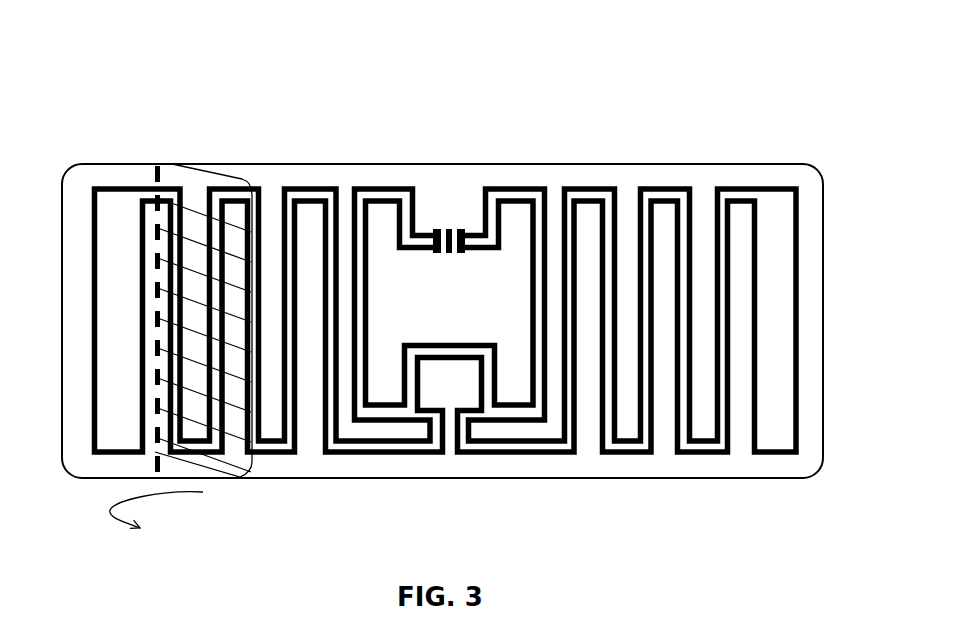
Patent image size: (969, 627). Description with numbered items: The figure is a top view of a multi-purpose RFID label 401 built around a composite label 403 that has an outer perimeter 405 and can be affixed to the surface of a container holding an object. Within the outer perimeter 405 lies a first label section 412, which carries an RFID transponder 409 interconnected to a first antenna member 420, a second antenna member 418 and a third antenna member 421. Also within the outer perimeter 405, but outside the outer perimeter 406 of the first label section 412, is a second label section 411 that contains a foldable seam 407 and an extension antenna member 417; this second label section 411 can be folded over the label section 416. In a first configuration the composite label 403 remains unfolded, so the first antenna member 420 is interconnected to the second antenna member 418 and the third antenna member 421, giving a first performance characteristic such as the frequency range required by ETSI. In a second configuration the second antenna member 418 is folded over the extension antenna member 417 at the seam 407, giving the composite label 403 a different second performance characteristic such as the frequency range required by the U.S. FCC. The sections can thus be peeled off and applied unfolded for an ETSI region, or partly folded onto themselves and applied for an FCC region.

The multi-purpose RFID label 401 is at (433, 294).
The composite label 403 is at (612, 153).
The outer perimeter 405 is at (90, 156).
The outer perimeter of the first label section 406 is at (444, 154).
The foldable seam 407 is at (157, 155).
The RFID transponder 409 is at (449, 264).
The second label section 411 is at (90, 479).
The first label section 412 is at (470, 178).
The label section 416 is at (246, 174).
The extension antenna member 417 is at (216, 178).
The second antenna member 418 is at (122, 271).
The first antenna member 420 is at (490, 425).
The third antenna member 421 is at (775, 437).